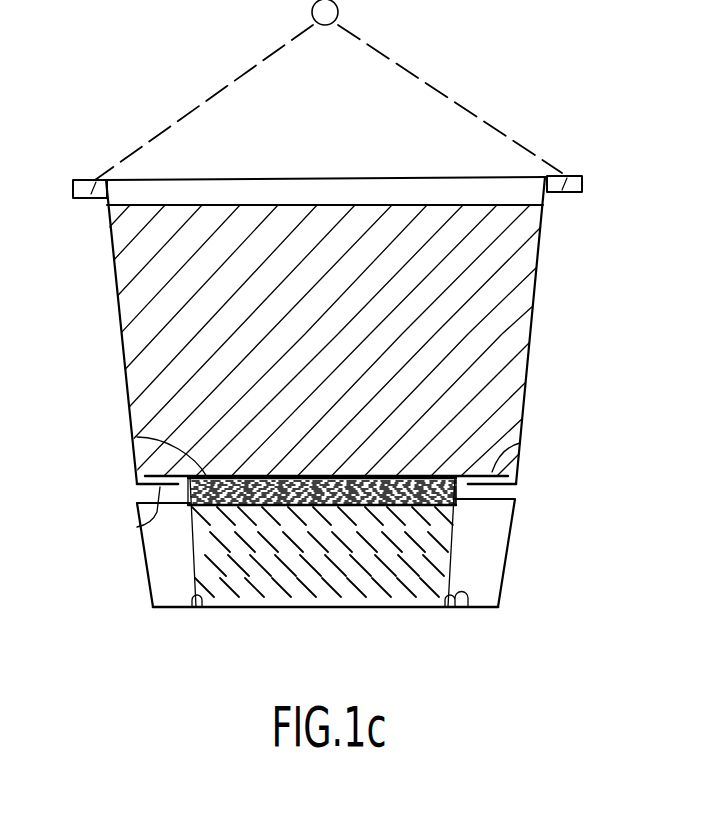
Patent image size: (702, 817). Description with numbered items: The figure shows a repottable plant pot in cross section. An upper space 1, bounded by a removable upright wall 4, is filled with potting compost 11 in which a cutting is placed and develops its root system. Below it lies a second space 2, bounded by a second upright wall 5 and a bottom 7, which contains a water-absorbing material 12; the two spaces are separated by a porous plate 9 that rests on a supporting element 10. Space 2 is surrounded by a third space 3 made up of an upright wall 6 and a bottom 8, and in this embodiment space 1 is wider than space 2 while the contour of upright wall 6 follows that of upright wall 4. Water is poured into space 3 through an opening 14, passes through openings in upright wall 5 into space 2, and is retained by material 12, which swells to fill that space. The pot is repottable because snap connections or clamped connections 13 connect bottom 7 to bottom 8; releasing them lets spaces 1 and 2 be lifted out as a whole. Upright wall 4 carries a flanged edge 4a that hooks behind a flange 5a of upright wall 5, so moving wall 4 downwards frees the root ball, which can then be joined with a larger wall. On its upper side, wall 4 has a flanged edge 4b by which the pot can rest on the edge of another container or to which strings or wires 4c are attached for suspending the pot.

The space 1 is at (271, 347).
The second space 2 is at (250, 575).
The third space 3 is at (280, 586).
The upright wall 4 is at (117, 317).
The flanged edge 4a is at (137, 527).
The flanged edge 4b is at (568, 173).
The strings or wires 4c is at (245, 75).
The second upright wall 5 is at (187, 575).
The flange 5a is at (520, 443).
The upright wall 6 is at (148, 602).
The bottom 7 is at (297, 612).
The bottom 8 is at (178, 608).
The porous plate 9 is at (137, 437).
The supporting element 10 is at (432, 503).
The potting compost 11 is at (197, 363).
The material 12 is at (257, 582).
The snap connections or clamped connections 13 is at (472, 608).
The opening 14 is at (138, 495).